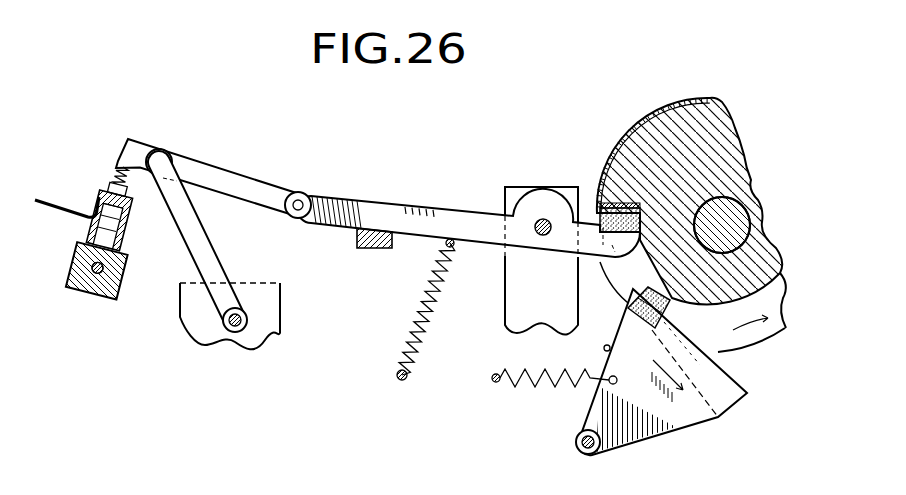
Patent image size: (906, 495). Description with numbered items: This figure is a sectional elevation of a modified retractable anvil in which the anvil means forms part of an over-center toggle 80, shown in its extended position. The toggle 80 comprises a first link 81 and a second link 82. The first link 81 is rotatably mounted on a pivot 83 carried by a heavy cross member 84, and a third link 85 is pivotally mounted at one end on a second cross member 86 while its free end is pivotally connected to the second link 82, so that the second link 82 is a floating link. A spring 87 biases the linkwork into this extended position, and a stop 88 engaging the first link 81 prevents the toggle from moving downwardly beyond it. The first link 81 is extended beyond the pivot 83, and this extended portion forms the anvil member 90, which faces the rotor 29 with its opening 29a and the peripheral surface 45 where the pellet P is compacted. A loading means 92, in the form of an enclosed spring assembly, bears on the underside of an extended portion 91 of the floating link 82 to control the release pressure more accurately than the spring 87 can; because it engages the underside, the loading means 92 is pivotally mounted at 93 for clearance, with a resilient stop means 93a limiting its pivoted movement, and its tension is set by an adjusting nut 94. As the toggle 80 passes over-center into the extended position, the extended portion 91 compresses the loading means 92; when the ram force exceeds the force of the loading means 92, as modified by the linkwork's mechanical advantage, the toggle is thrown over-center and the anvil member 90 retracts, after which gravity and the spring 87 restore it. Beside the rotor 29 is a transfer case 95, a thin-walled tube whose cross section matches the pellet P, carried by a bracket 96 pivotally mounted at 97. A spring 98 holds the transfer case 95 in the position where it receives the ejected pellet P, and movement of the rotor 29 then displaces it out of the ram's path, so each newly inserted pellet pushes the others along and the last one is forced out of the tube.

The rotor 29 is at (730, 155).
The cam shaft opening 29a is at (742, 213).
The friction band on cam periphery 45 is at (664, 107).
The over-center toggle 80 is at (422, 186).
The first link 81 is at (350, 203).
The second link 82 is at (223, 175).
The pivot 83 is at (545, 219).
The heavy cross member 84 is at (513, 302).
The third link 85 is at (203, 243).
The second cross member 86 is at (190, 320).
The spring 87 is at (423, 337).
The stop 88 is at (380, 250).
The anvil member 90 is at (634, 240).
The extended portion 91 is at (133, 147).
The loading means 92 is at (123, 243).
The pivotal mounting 93 is at (80, 257).
The resilient stop means 93a is at (66, 207).
The adjusting nut 94 is at (110, 182).
The transfer case 95 is at (750, 372).
The bracket 96 is at (680, 427).
The pivot 97 is at (593, 453).
The spring 98 is at (545, 390).
The pellet P is at (647, 291).